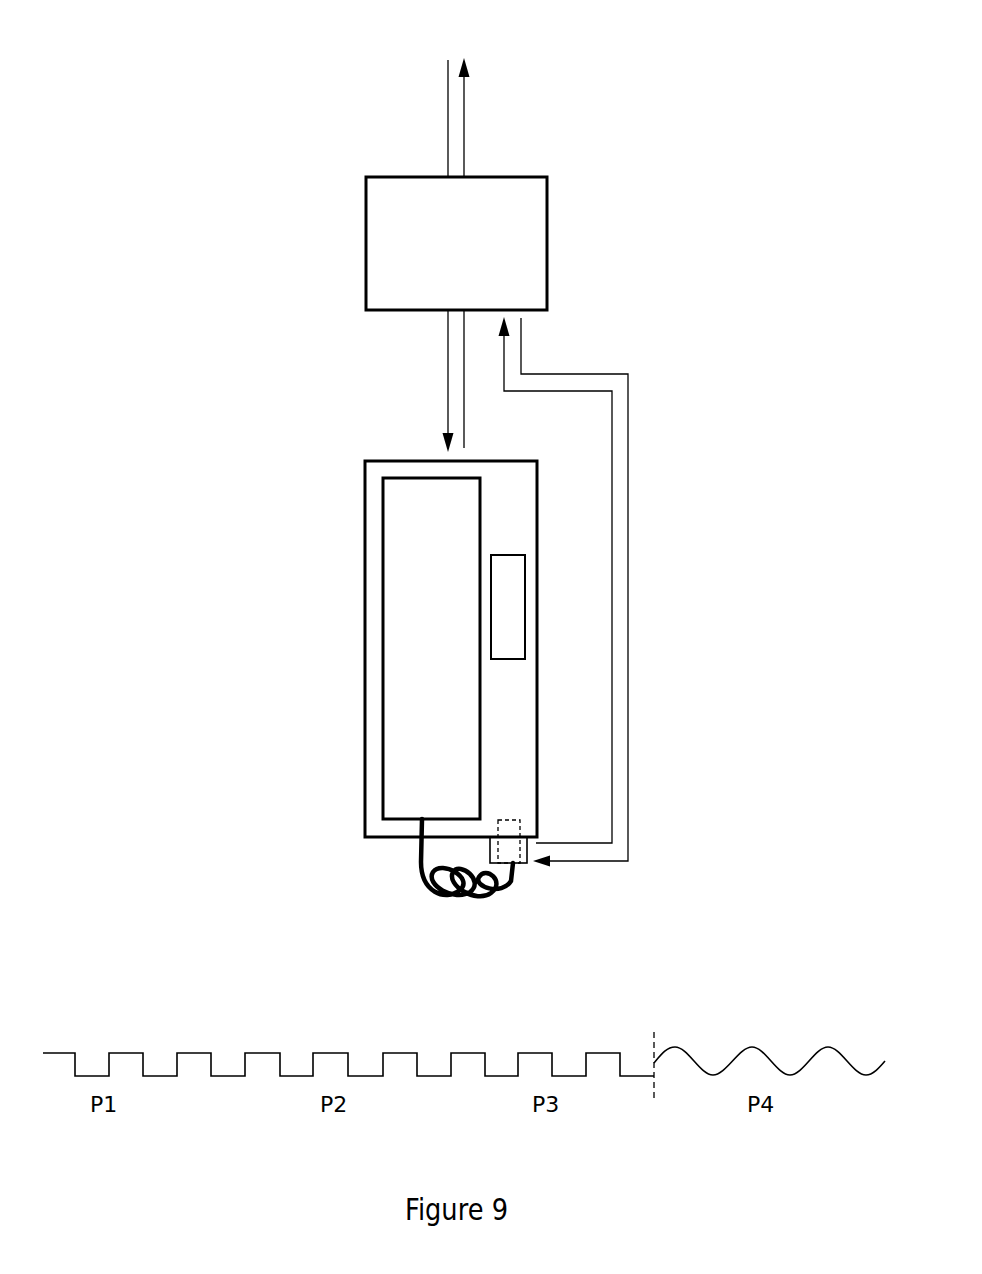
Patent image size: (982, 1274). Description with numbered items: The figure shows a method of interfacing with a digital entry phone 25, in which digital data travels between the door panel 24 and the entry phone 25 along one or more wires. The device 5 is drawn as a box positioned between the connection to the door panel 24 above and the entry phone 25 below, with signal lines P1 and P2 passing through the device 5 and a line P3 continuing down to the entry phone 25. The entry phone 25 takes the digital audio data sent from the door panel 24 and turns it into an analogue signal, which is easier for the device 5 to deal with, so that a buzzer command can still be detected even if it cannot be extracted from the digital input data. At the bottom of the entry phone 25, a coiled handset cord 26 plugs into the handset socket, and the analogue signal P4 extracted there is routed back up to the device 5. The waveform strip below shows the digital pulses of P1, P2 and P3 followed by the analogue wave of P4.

The device 5 is at (375, 245).
The door panel 24 is at (453, 89).
The entry phone 25 is at (377, 497).
The coiled cord connector 26 is at (516, 870).
The signal P1 is at (441, 173).
The signal P2 is at (440, 320).
The signal P3 is at (437, 451).
The signal P4 is at (545, 840).